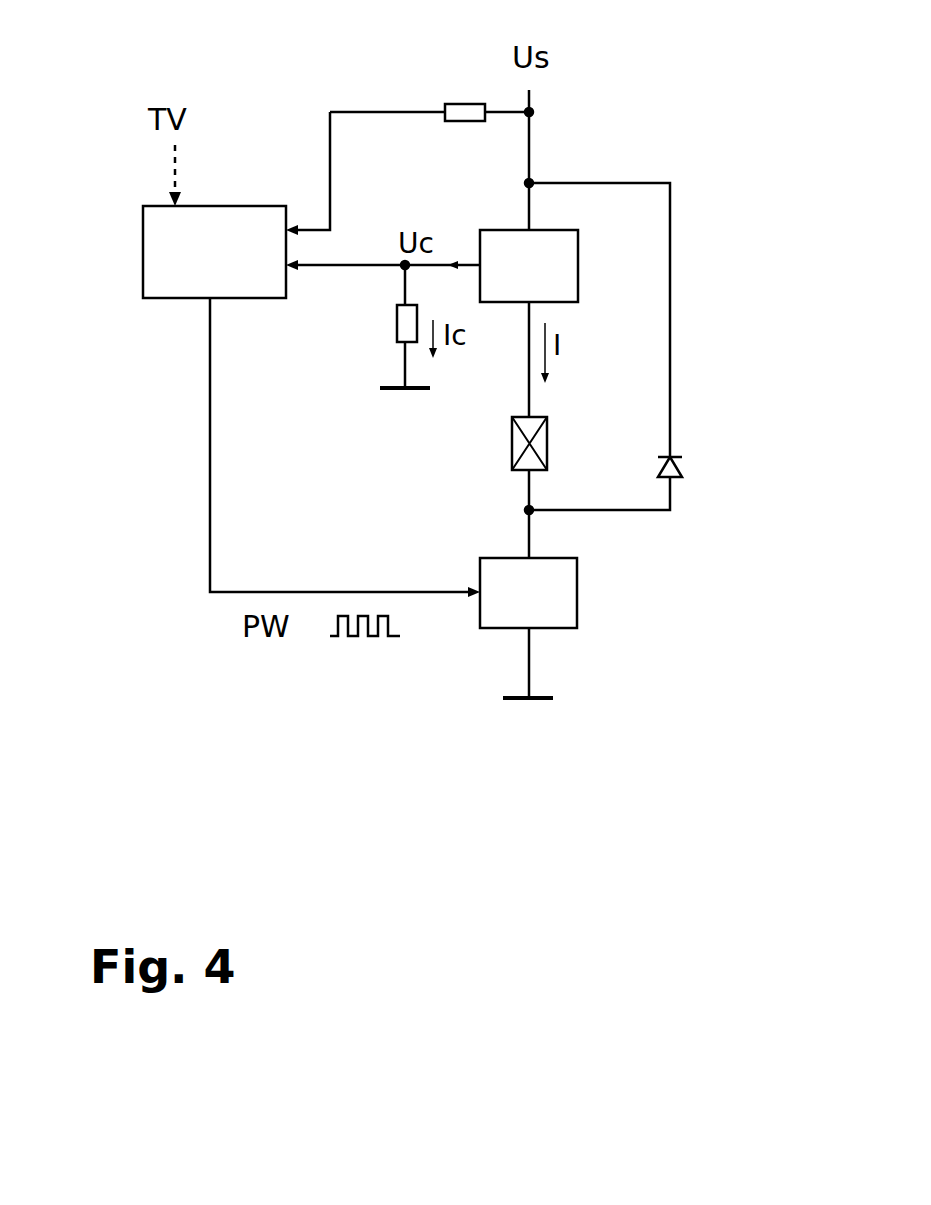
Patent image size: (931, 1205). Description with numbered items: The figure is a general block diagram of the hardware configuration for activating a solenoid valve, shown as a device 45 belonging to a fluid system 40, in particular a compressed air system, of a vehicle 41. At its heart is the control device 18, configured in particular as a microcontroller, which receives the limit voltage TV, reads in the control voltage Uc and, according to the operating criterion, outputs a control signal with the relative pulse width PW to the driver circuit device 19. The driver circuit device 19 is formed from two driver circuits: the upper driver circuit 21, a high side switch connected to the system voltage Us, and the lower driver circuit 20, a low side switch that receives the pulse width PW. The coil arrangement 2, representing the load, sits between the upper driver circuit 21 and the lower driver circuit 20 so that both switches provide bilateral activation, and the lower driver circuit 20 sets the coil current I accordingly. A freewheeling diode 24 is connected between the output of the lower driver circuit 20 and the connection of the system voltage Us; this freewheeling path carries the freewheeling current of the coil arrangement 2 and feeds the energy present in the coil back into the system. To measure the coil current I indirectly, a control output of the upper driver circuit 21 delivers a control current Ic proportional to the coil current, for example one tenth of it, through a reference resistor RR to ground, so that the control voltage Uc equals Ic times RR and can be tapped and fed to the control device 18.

The coil arrangement 2 is at (512, 455).
The control device 18 is at (165, 298).
The driver circuit device 19 is at (690, 598).
The lower driver circuit 20 is at (578, 607).
The upper driver circuit 21 is at (570, 290).
The freewheeling diode 24 is at (683, 458).
The fluid system 40 is at (400, 760).
The vehicle 41 is at (446, 870).
The device 45 is at (567, 851).
The reference resistor RR is at (397, 342).